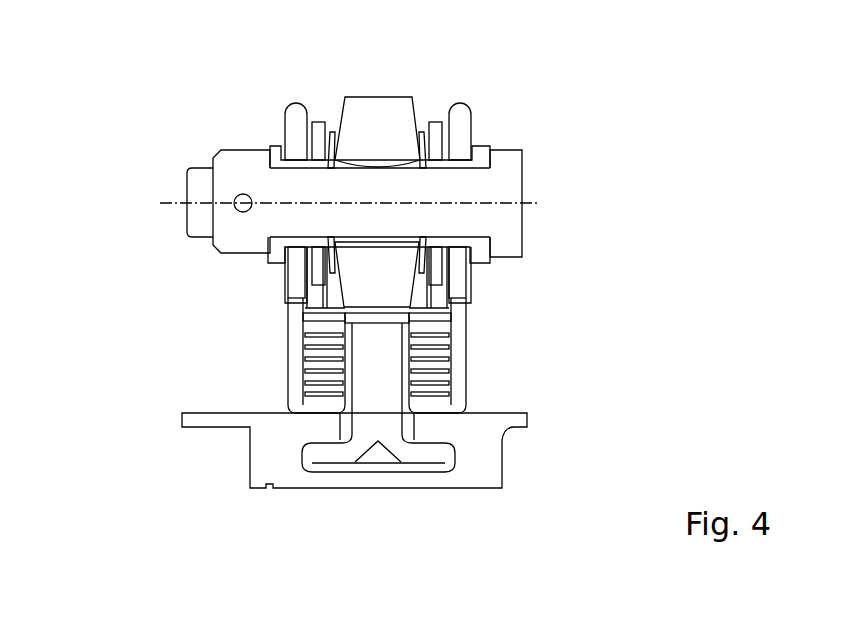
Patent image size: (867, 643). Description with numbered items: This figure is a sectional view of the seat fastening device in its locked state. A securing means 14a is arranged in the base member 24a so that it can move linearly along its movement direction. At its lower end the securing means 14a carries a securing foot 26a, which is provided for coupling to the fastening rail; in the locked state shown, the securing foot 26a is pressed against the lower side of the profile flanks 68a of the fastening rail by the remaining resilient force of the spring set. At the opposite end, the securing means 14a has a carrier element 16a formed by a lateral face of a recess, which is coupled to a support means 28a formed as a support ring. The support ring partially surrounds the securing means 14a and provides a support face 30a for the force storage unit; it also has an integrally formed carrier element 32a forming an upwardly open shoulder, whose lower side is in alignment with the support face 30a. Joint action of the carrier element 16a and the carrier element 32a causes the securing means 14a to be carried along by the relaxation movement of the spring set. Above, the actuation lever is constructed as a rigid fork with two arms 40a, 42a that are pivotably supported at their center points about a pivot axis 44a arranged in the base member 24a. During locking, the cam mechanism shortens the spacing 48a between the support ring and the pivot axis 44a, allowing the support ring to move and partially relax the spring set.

The securing means 14a is at (377, 373).
The carrier element 16a is at (404, 318).
The base member 24a is at (365, 107).
The securing foot 26a is at (325, 458).
The support means 28a is at (425, 327).
The support face 30a is at (450, 358).
The carrier element 32a is at (343, 330).
The arm 40a is at (305, 120).
The arm 42a is at (433, 128).
The pivot axis 44a is at (537, 203).
The spacing 48a is at (178, 265).
The profile flanks 68a is at (425, 425).